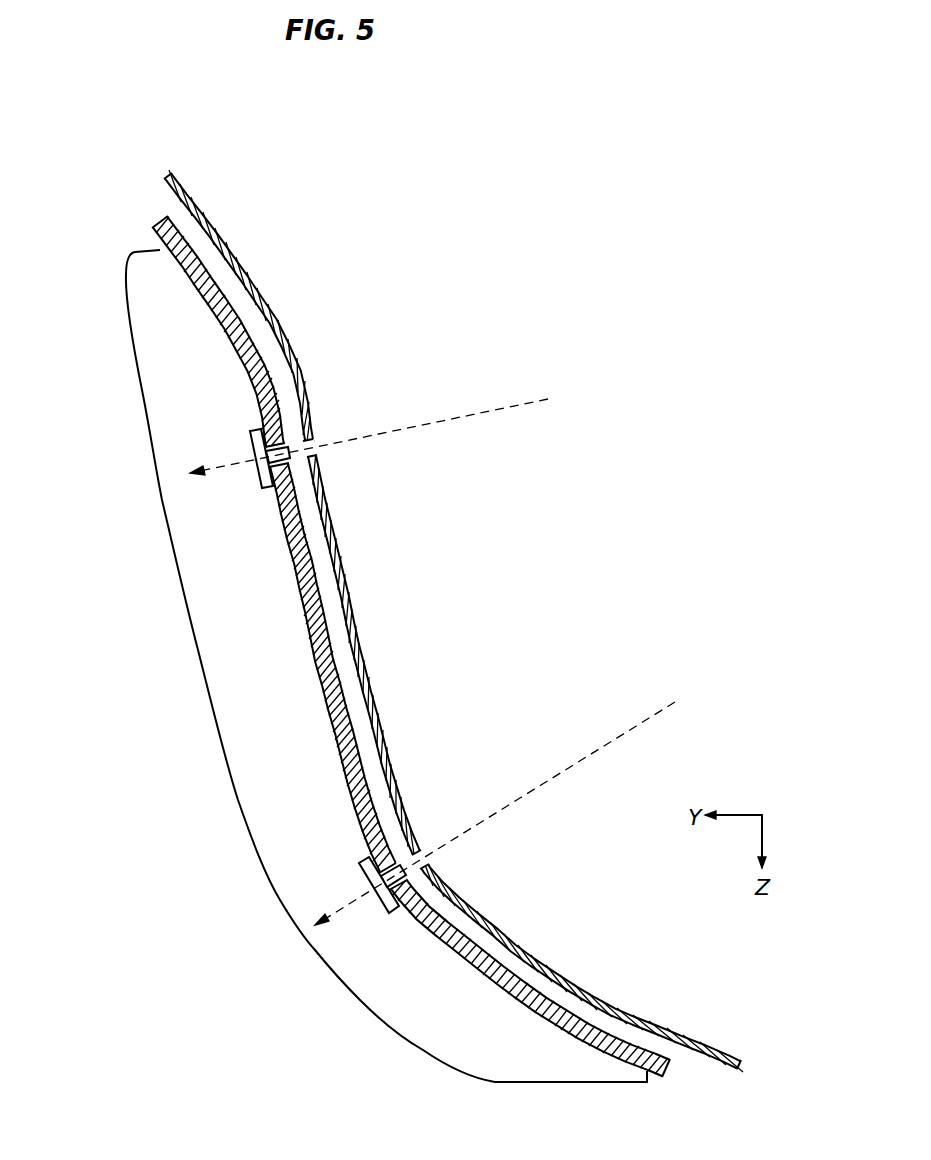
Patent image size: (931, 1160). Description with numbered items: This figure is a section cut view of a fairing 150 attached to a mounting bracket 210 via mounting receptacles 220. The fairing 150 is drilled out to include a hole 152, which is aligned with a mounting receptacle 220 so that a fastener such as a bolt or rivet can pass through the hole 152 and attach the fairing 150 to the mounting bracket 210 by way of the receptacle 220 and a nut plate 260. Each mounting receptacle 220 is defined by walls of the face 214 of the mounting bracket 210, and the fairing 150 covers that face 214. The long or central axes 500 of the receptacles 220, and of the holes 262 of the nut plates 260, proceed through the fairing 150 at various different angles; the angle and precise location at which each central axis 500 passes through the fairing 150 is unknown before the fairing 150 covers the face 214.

The fairing 150 is at (193, 210).
The hole 152 is at (314, 447).
The mounting bracket 210 is at (310, 653).
The face 214 is at (154, 224).
The mounting receptacle 220 is at (266, 428).
The nut plate 260 is at (262, 489).
The hole 262 is at (258, 465).
The central axis 500 is at (412, 430).